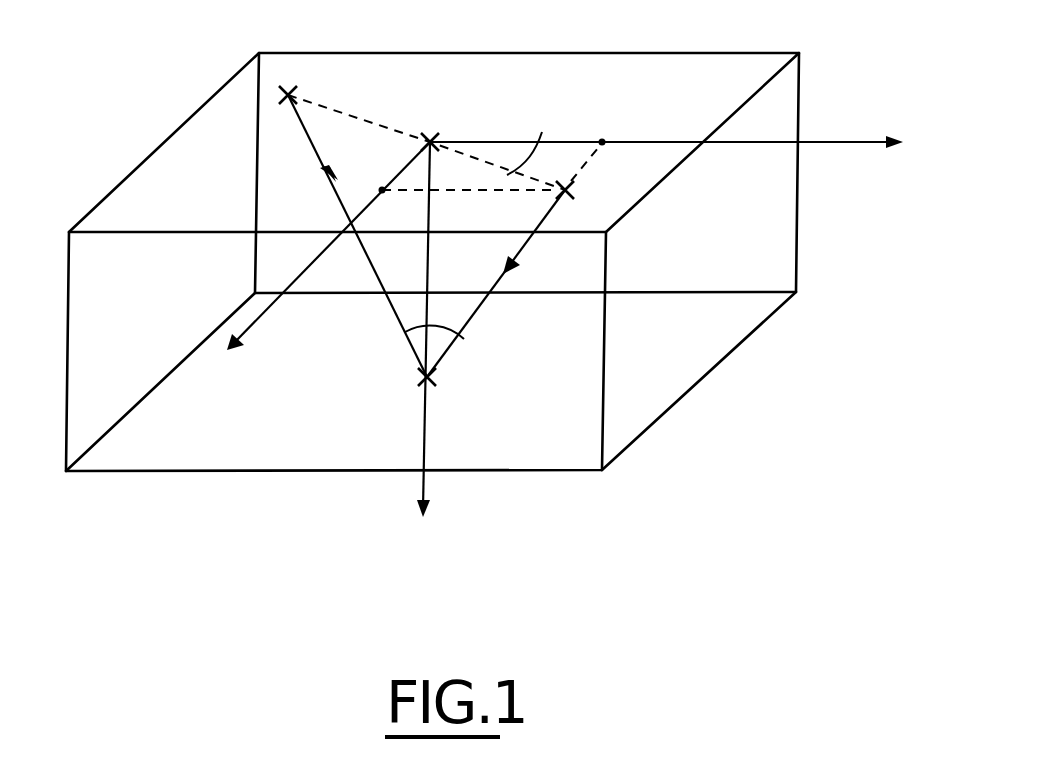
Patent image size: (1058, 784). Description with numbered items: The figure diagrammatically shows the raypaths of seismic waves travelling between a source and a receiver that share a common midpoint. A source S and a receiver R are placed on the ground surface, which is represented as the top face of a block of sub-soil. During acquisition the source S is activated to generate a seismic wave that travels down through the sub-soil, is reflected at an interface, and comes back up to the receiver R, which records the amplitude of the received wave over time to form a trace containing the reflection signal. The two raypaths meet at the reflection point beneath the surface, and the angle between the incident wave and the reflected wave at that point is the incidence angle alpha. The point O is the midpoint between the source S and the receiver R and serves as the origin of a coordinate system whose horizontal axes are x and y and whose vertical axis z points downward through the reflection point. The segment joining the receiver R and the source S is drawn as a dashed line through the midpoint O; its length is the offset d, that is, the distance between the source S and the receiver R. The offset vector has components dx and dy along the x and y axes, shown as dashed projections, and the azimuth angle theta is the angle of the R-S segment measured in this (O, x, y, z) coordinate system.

The receiver R is at (353, 218).
The midpoint O is at (440, 126).
The source S is at (512, 278).
The x-component of the offset vector dx is at (359, 172).
The y-component of the offset vector dy is at (626, 125).
The offset d is at (462, 180).
The azimuth angle theta is at (530, 154).
The incidence angle alpha is at (437, 346).
The x axis x is at (328, 258).
The y axis y is at (681, 133).
The z axis z is at (411, 343).